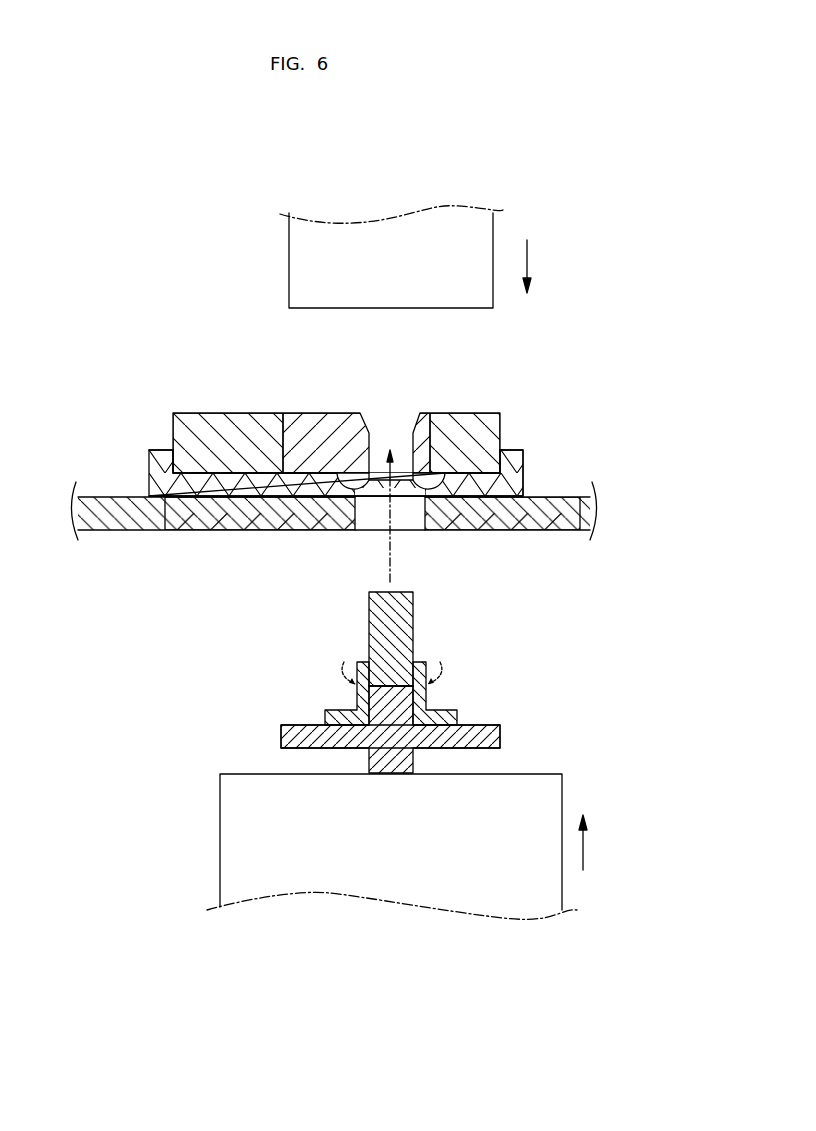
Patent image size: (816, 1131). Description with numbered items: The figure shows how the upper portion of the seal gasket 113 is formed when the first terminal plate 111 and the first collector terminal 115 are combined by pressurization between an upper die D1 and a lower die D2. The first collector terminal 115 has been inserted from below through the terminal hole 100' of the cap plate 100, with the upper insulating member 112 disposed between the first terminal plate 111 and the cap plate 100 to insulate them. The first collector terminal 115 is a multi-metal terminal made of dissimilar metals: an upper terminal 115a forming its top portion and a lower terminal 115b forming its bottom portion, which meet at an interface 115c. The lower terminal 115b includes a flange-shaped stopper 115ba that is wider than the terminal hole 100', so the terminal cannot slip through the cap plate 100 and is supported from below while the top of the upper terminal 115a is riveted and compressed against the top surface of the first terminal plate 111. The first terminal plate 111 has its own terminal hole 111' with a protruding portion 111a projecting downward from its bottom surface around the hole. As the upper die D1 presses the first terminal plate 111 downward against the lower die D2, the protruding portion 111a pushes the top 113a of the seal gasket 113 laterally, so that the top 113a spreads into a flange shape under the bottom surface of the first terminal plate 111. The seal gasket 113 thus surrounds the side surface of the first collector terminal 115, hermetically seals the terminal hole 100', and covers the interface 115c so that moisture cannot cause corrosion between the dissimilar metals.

The upper die D1 is at (295, 244).
The lower die D2 is at (232, 838).
The cap plate 100 is at (335, 472).
The terminal hole 100' is at (442, 542).
The first terminal plate 111 is at (336, 409).
The terminal hole of the first terminal plate 111' is at (369, 462).
The protruding portion 111a is at (428, 478).
The upper insulating member 112 is at (523, 450).
The seal gasket 113 is at (427, 688).
The top of the seal gasket 113a is at (442, 667).
The first collector terminal 115 is at (268, 603).
The upper terminal 115a is at (380, 617).
The lower terminal 115b is at (390, 703).
The stopper 115ba is at (500, 736).
The interface 115c is at (390, 683).